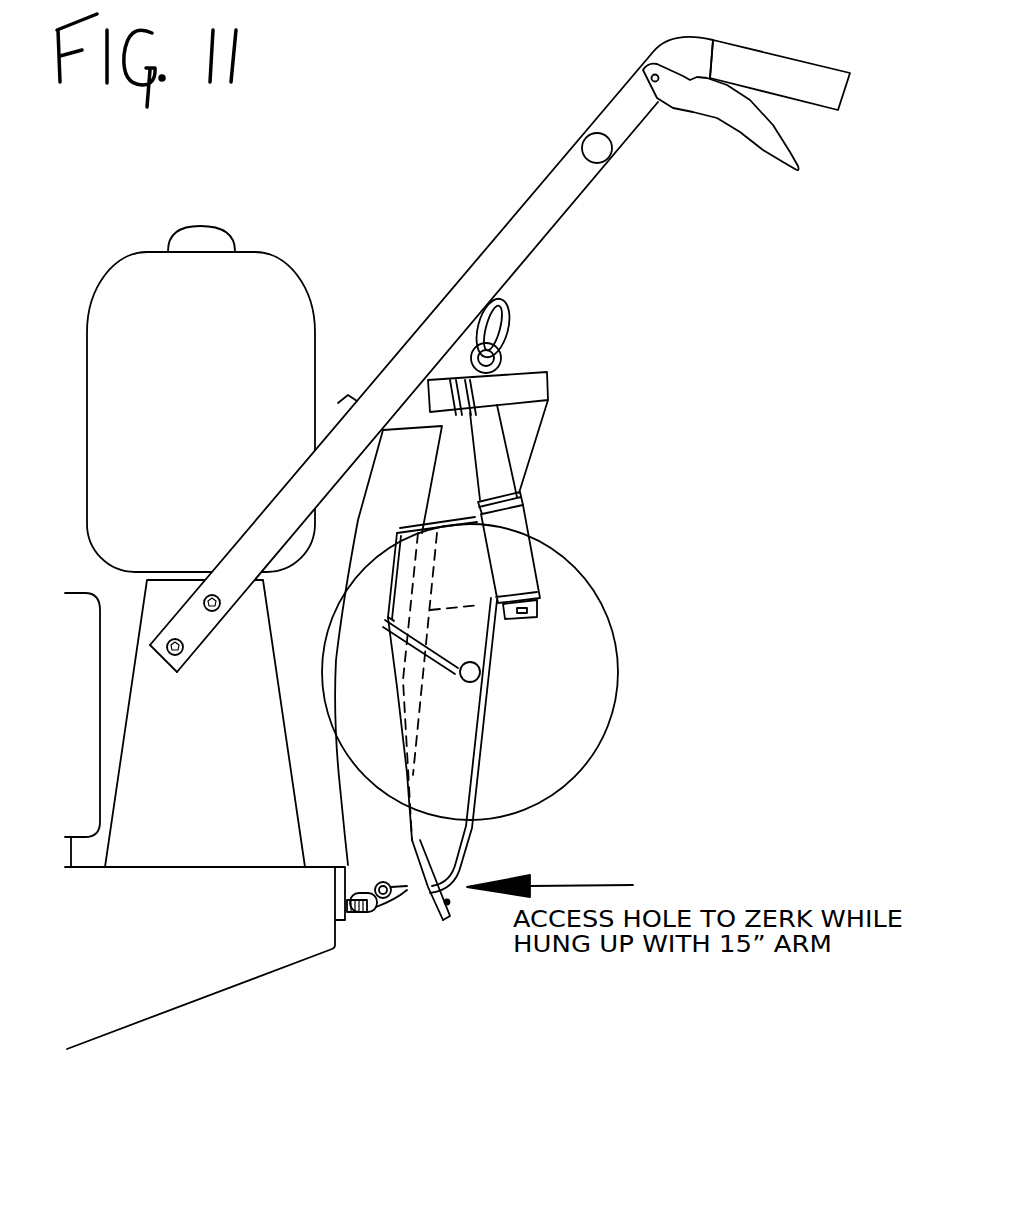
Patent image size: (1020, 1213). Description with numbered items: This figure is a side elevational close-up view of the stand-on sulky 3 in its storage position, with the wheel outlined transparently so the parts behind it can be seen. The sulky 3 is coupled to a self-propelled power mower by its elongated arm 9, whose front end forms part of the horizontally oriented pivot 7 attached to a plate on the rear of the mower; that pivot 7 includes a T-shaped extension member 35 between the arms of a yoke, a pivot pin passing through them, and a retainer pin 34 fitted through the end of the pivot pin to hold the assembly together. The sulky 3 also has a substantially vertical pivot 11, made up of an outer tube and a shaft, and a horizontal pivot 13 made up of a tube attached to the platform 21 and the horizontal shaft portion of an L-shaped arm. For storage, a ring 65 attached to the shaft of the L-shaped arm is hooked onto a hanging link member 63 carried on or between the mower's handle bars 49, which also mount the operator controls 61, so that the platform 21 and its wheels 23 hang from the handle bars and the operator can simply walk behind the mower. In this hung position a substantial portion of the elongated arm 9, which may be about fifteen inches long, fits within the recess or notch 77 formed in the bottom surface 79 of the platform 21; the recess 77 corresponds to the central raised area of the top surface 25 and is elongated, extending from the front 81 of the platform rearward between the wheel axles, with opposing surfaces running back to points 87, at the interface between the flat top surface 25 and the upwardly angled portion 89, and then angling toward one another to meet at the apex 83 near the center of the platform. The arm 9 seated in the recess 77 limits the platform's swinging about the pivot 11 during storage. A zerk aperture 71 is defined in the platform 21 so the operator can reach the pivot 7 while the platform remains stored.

The stand-on sulky 3 is at (683, 560).
The pivot 7 is at (394, 946).
The elongated arm 9 is at (395, 470).
The pivot 11 is at (527, 390).
The horizontal pivot 13 is at (490, 453).
The platform 21 is at (473, 748).
The wheels 23 is at (570, 560).
The top surface 25 is at (433, 893).
The retainer pin 34 is at (343, 907).
The T-shaped extension member 35 is at (352, 882).
The handle bars 49 is at (547, 203).
The operator controls 61 is at (712, 105).
The hanging link member 63 is at (500, 317).
The ring 65 is at (507, 367).
The zerk aperture 71 is at (467, 927).
The recess or notch 77 is at (418, 707).
The bottom surface 79 is at (423, 870).
The front of the platform 81 is at (462, 515).
The apex 83 is at (413, 777).
The points 87 is at (385, 620).
The angled portion 89 is at (387, 597).